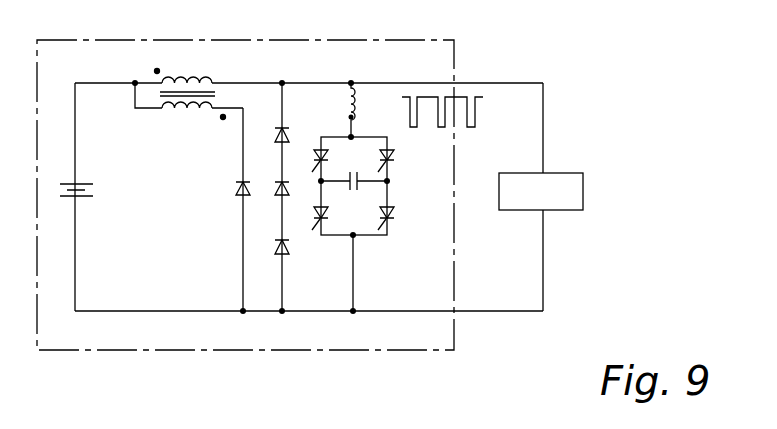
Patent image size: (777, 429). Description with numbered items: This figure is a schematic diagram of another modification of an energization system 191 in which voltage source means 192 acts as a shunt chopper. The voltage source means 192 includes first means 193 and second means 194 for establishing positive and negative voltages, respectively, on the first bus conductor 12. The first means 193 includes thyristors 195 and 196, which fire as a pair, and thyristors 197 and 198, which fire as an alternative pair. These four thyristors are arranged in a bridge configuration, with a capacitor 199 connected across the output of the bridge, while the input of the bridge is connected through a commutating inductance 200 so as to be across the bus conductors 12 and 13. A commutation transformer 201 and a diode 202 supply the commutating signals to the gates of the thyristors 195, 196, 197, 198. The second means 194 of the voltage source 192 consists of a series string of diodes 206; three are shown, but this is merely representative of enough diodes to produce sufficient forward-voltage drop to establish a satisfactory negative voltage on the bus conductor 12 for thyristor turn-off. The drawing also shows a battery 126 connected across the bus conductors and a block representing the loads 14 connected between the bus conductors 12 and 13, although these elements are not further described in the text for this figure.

The first bus conductor 12 is at (475, 83).
The bus conductor 13 is at (487, 312).
The loads 14 is at (565, 173).
The battery 126 is at (88, 182).
The energization system 191 is at (468, 392).
The voltage source means 192 is at (327, 350).
The first means 193 is at (379, 202).
The second means 194 is at (244, 197).
The thyristor 195 is at (322, 147).
The thyristor 196 is at (397, 207).
The thyristor 197 is at (392, 148).
The thyristor 198 is at (333, 212).
The capacitor 199 is at (348, 172).
The commutating inductance 200 is at (355, 117).
The commutation transformer 201 is at (212, 92).
The diode 202 is at (240, 197).
The series string of diodes 206 is at (280, 181).